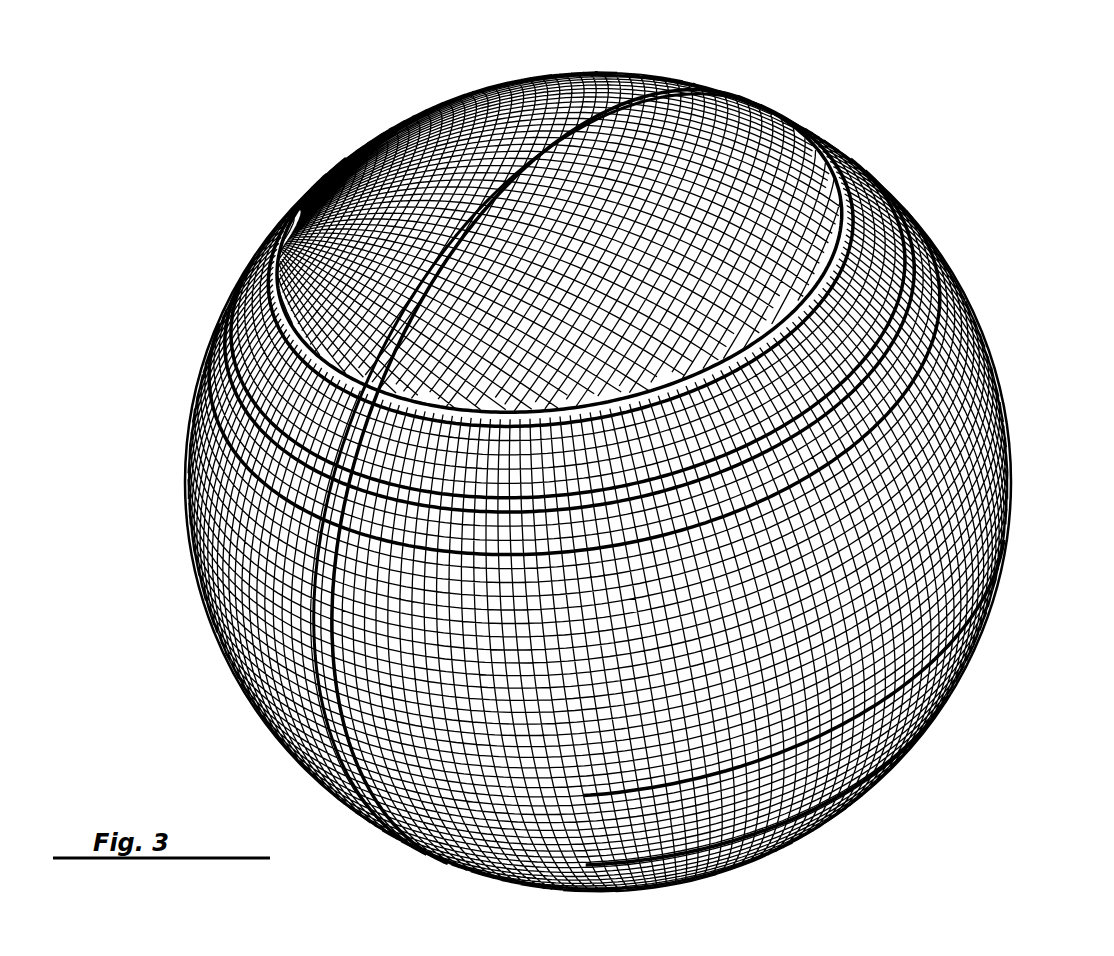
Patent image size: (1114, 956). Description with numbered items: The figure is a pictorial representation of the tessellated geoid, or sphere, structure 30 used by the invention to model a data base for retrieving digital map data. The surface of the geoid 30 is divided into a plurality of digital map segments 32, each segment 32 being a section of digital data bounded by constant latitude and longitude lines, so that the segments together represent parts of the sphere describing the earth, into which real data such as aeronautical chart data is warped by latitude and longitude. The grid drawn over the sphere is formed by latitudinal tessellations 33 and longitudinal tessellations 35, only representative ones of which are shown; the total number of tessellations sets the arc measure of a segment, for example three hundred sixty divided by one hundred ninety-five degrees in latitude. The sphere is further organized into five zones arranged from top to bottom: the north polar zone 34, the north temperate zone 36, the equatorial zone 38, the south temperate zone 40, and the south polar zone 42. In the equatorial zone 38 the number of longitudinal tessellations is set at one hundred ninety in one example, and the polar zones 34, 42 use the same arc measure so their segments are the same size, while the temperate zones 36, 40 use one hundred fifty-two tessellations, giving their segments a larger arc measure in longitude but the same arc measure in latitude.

The tessellated geoid structure 30 is at (1079, 293).
The digital map segment 32 is at (915, 245).
The latitudinal tessellation 33 is at (658, 73).
The north polar zone 34 is at (692, 124).
The longitudinal tessellation 35 is at (303, 388).
The north temperate zone 36 is at (915, 290).
The equatorial zone 38 is at (1000, 393).
The south temperate zone 40 is at (935, 693).
The south polar zone 42 is at (778, 838).